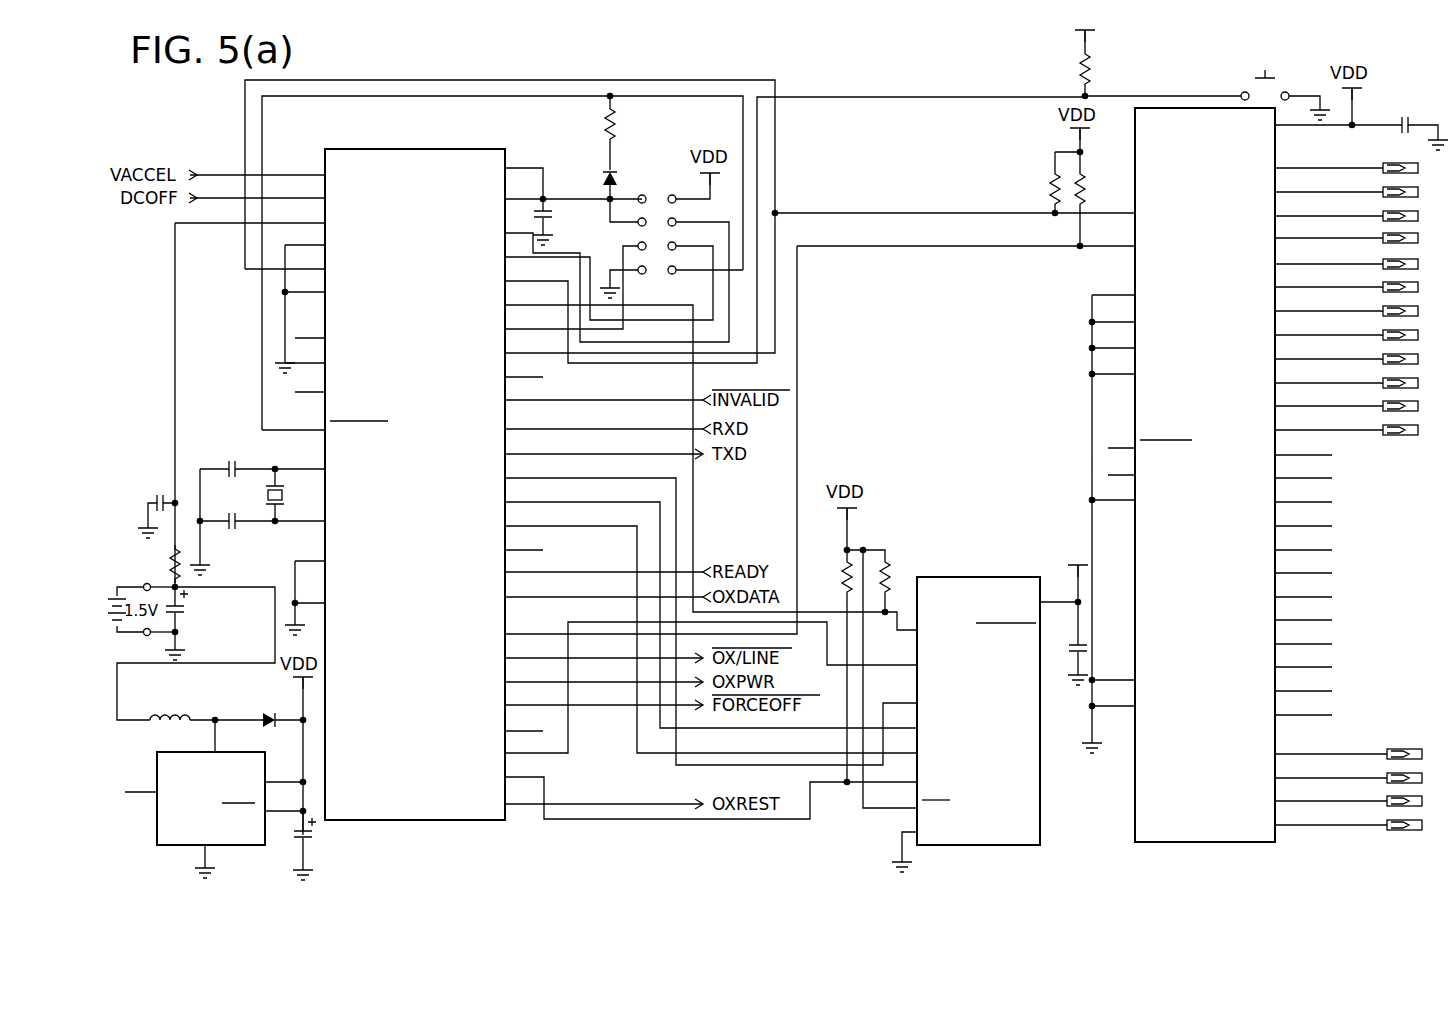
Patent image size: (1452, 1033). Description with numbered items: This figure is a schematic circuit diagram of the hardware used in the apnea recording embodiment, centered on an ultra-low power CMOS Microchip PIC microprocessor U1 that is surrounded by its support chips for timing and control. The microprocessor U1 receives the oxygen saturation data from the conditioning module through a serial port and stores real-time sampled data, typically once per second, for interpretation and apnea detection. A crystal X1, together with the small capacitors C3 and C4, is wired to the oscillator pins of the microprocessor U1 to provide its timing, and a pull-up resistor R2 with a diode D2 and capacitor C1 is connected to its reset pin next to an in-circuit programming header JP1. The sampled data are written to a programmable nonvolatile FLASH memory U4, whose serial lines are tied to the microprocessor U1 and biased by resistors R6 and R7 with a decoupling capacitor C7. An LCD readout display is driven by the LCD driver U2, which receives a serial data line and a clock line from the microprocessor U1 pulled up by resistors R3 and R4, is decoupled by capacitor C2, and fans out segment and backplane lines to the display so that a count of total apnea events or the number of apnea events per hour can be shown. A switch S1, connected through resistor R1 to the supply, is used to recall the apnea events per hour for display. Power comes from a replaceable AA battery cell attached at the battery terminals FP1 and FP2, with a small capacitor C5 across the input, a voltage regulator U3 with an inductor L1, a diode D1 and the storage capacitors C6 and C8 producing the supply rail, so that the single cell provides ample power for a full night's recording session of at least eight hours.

The microprocessor U1 is at (414, 485).
The LCD display driver U2 is at (1252, 491).
The S-8321 voltage regulator U3 is at (205, 799).
The FLASH memory U4 is at (984, 710).
The resistor 10K R1 is at (1071, 52).
The resistor 10K R2 is at (629, 132).
The resistor 10K R3 is at (1033, 182).
The resistor 10K R4 is at (1088, 188).
The resistor 200K R6 is at (824, 646).
The resistor 10K R7 is at (884, 571).
The capacitor .01 C1 is at (558, 224).
The capacitor .01 C2 is at (1361, 116).
The capacitor 15 C3 is at (262, 448).
The capacitor 15 C4 is at (262, 545).
The capacitor .01 C5 is at (158, 495).
The capacitor 22uF/10V C6 is at (217, 613).
The capacitor .01 C7 is at (1069, 613).
The capacitor 22uF/10V C8 is at (344, 845).
The diode MBR0520LTI D1 is at (243, 721).
The diode 1N314 D2 is at (582, 173).
The inductor 100uH L1 is at (154, 697).
The crystal X1 is at (261, 495).
The switch S1 is at (1285, 83).
The ICP jumper header JP1 is at (658, 235).
The battery terminal FP1 is at (145, 576).
The battery terminal FP2 is at (145, 643).